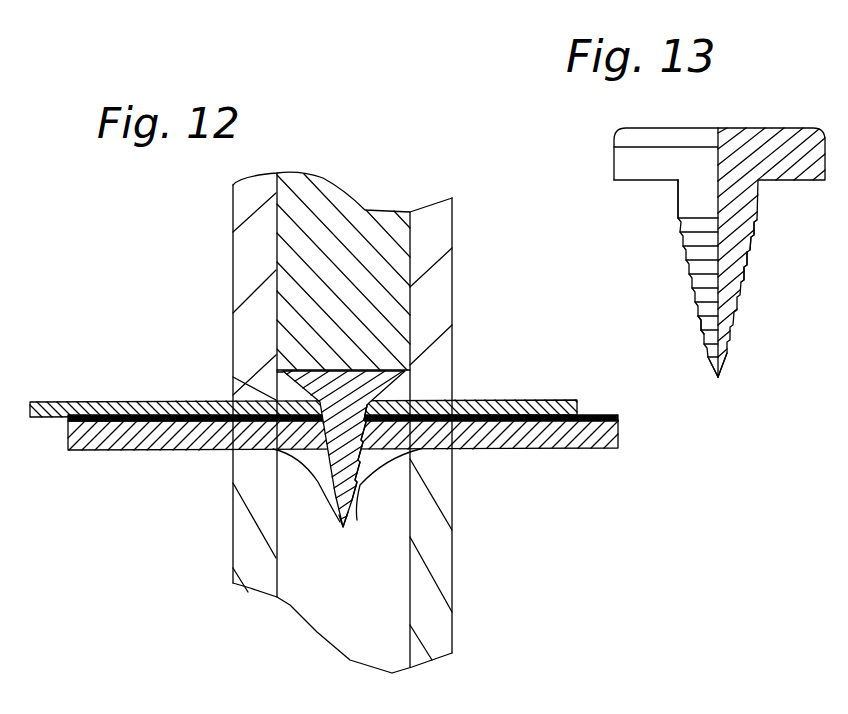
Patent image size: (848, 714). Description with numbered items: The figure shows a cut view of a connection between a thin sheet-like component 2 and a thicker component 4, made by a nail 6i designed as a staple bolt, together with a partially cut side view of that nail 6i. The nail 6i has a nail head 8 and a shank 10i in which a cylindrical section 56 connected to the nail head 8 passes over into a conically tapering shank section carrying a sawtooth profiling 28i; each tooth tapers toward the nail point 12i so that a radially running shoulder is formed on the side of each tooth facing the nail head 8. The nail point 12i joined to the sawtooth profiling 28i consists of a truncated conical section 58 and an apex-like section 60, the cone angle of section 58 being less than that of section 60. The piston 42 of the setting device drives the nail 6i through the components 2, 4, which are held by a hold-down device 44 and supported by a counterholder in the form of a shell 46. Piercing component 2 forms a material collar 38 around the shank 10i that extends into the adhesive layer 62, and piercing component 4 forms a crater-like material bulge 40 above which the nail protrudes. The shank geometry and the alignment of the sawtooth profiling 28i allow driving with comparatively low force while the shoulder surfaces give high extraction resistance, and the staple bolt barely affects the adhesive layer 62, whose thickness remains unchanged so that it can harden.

In FIG. 12, the component 2 is at (102, 418).
In FIG. 12, the component 4 is at (110, 432).
In FIG. 12, the nail 6i is at (330, 530).
In FIG. 13, the nail 6i is at (656, 271).
In FIG. 12, the nail head 8 is at (400, 378).
In FIG. 13, the nail head 8 is at (614, 158).
In FIG. 12, the shank 10i is at (370, 438).
In FIG. 13, the shank 10i is at (740, 243).
In FIG. 12, the nail point 12i is at (349, 512).
In FIG. 13, the nail point 12i is at (730, 355).
In FIG. 12, the sawtooth profiling 28i is at (372, 443).
In FIG. 13, the sawtooth profiling 28i is at (753, 283).
In FIG. 12, the material collar 38 is at (278, 374).
In FIG. 12, the crater-like material bulge 40 is at (302, 456).
In FIG. 12, the piston 42 is at (343, 195).
In FIG. 12, the hold-down device 44 is at (246, 247).
In FIG. 12, the shell 46 is at (247, 552).
In FIG. 13, the cylindrical section 56 is at (678, 198).
In FIG. 13, the truncated conical section 58 is at (700, 333).
In FIG. 13, the apex-like section 60 is at (710, 363).
In FIG. 12, the adhesive layer 62 is at (605, 416).